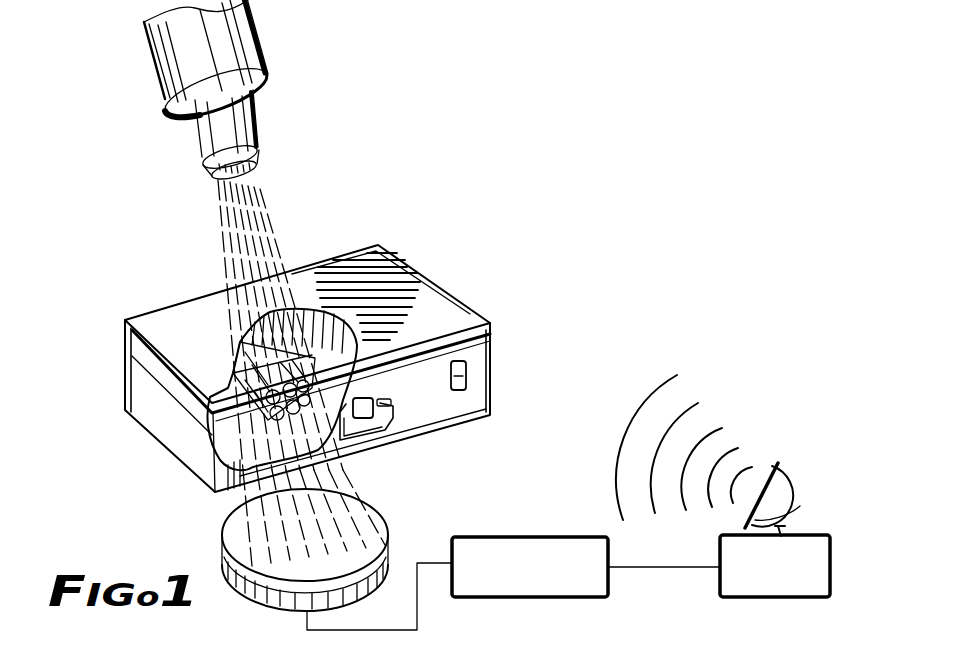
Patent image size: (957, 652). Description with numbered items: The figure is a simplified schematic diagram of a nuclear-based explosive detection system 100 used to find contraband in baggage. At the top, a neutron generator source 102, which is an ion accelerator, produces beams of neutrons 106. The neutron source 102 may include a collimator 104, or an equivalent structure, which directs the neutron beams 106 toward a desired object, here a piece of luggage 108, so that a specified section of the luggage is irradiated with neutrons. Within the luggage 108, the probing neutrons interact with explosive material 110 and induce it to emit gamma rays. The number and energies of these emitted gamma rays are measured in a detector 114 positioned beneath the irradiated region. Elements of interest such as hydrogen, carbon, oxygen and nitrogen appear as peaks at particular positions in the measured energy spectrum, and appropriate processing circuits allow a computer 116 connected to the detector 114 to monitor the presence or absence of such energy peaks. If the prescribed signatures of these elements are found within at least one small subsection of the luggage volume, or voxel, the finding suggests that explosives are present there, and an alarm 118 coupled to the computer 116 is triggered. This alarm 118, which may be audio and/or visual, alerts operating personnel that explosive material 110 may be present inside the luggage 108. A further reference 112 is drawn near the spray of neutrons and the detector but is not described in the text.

The nuclear-based explosive detection system 100 is at (474, 80).
The neutron generator source 102 is at (288, 106).
The collimator 104 is at (197, 152).
The neutron beams 106 is at (276, 202).
The luggage 108 is at (482, 322).
The explosive material 110 is at (232, 392).
The spray deposit 112 is at (346, 491).
The detector 114 is at (378, 516).
The computer 116 is at (534, 537).
The alarm 118 is at (836, 543).